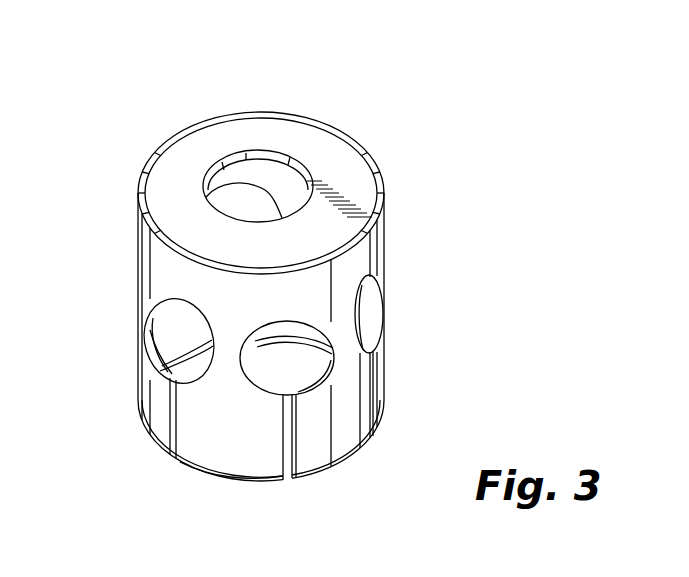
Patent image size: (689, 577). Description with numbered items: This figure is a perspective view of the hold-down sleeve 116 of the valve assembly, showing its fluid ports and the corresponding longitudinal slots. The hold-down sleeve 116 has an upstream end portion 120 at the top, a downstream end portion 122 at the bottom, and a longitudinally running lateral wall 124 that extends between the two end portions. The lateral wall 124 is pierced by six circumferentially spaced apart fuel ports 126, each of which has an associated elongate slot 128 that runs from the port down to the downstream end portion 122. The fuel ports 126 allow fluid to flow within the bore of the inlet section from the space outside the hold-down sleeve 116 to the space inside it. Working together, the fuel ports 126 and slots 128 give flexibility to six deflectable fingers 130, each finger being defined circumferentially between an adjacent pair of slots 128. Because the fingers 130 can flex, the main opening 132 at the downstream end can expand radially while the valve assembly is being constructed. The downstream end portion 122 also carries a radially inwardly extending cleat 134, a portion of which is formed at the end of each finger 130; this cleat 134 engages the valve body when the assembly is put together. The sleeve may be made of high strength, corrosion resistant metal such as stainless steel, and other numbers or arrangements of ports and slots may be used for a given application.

The hold-down sleeve 116 is at (354, 90).
The upstream end portion 120 is at (190, 152).
The downstream end portion 122 is at (328, 465).
The lateral wall 124 is at (143, 257).
The fuel ports 126 is at (170, 331).
The elongate slot 128 is at (172, 412).
The deflectable fingers 130 is at (140, 400).
The main opening 132 is at (226, 492).
The cleat 134 is at (198, 341).